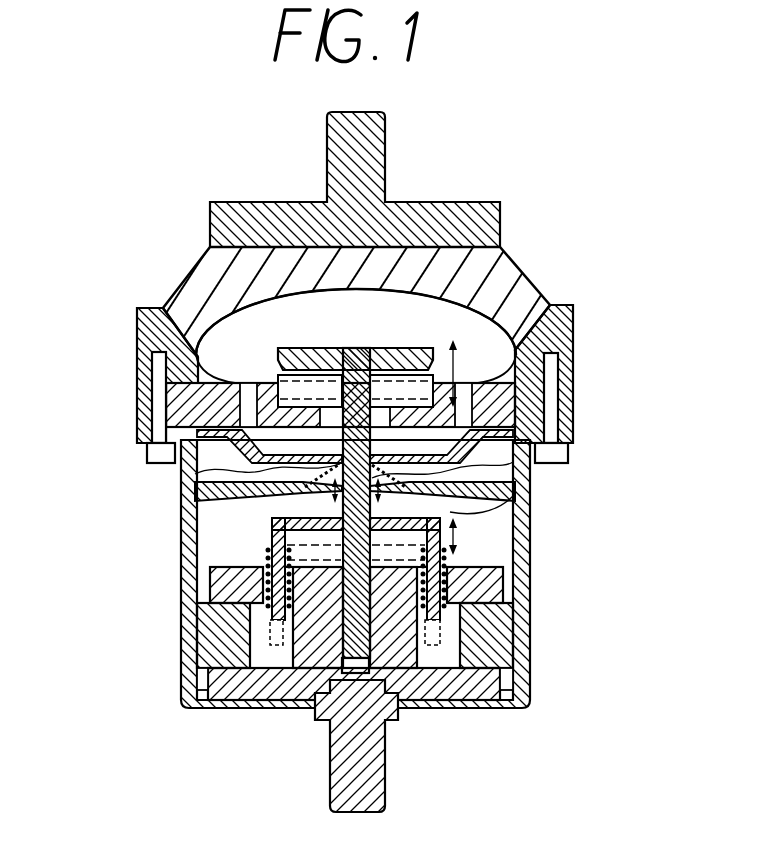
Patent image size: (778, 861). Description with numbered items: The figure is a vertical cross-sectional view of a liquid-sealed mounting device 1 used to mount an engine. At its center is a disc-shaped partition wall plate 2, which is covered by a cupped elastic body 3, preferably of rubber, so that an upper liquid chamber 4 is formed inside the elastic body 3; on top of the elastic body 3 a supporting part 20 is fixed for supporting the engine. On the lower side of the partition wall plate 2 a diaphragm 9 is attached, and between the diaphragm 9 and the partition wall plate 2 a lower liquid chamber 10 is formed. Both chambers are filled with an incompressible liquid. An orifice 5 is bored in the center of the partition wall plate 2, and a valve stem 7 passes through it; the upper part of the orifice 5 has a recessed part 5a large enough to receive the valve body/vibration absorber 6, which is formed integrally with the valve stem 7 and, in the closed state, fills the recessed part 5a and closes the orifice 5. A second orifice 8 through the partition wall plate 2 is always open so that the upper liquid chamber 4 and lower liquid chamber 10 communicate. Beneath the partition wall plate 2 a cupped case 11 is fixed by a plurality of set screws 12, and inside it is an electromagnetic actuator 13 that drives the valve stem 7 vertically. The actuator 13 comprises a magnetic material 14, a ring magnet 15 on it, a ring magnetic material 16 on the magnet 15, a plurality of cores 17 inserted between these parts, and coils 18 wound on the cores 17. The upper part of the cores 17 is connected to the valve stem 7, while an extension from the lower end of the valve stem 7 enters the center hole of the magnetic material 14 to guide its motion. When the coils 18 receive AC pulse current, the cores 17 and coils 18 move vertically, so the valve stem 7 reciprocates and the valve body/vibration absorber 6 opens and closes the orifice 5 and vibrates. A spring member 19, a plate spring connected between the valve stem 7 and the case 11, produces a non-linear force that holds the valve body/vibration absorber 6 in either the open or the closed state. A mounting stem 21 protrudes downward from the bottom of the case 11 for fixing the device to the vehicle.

The liquid-sealed mounting device 1 is at (183, 240).
The partition wall plate 2 is at (138, 407).
The cupped elastic body 3 is at (503, 265).
The upper liquid chamber 4 is at (487, 332).
The orifice 5 is at (380, 415).
The recessed part 5a is at (437, 383).
The valve body/vibration absorber 6 is at (307, 358).
The valve stem 7 is at (355, 403).
The second orifice 8 is at (160, 335).
The diaphragm 9 is at (528, 473).
The lower liquid chamber 10 is at (575, 420).
The cupped case 11 is at (530, 602).
The set screws 12 is at (145, 454).
The electromagnetic actuator 13 is at (256, 554).
The magnetic material 14 is at (265, 683).
The ring magnet 15 is at (207, 643).
The ring magnetic material 16 is at (207, 583).
The cores 17 is at (280, 650).
The coils 18 is at (270, 548).
The spring member 19 is at (187, 472).
The supporting part 20 is at (432, 202).
The mounting stem 21 is at (380, 784).